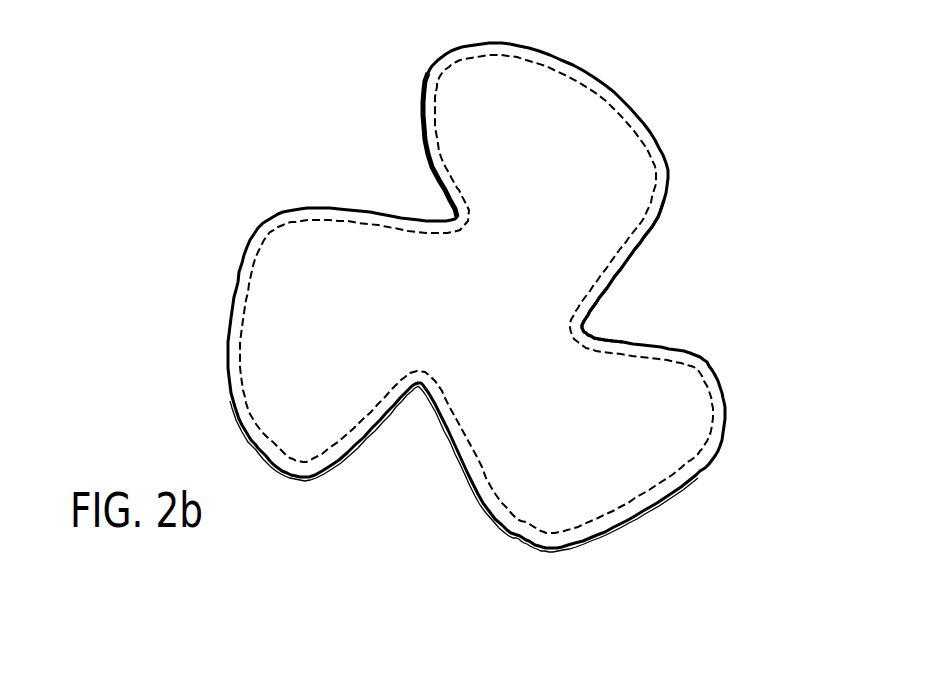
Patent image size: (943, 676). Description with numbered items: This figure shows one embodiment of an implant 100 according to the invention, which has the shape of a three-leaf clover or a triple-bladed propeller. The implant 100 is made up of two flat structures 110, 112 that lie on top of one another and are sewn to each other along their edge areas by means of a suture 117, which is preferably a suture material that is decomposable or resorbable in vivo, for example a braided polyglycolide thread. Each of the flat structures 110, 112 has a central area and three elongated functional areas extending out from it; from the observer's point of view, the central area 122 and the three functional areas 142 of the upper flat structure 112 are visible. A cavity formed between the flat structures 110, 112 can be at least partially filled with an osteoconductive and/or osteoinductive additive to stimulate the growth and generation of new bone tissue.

The implant 100 is at (660, 68).
The functional areas 142 is at (468, 102).
The suture 117 is at (633, 227).
The central area 122 is at (497, 288).
The flat structure 110 is at (307, 481).
The flat structure 112 is at (513, 540).